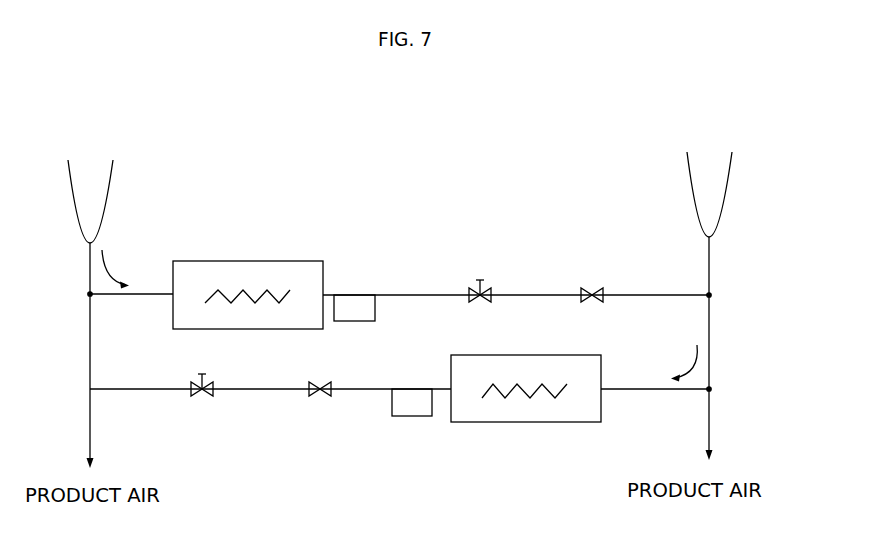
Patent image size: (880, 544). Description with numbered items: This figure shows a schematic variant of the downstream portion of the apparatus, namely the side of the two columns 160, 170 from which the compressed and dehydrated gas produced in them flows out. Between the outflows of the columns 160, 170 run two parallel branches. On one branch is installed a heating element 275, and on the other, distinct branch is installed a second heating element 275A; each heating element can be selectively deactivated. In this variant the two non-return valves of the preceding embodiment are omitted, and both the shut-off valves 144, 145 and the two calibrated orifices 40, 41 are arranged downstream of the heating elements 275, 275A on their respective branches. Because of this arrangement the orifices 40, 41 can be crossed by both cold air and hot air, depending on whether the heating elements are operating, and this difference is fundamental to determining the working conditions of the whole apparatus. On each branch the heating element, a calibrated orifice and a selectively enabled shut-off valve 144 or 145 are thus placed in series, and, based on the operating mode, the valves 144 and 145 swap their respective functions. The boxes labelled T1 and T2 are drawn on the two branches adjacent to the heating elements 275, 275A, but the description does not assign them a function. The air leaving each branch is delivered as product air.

The column 160 is at (90, 191).
The column 170 is at (709, 185).
The heating element 275 is at (248, 282).
The heating element 275A is at (526, 400).
The first temperature sensor T1 is at (354, 308).
The second temperature sensor T2 is at (412, 402).
The shut-off valve 144 is at (482, 278).
The orifice 40 is at (591, 282).
The shut-off valve 145 is at (201, 398).
The orifice 41 is at (319, 402).